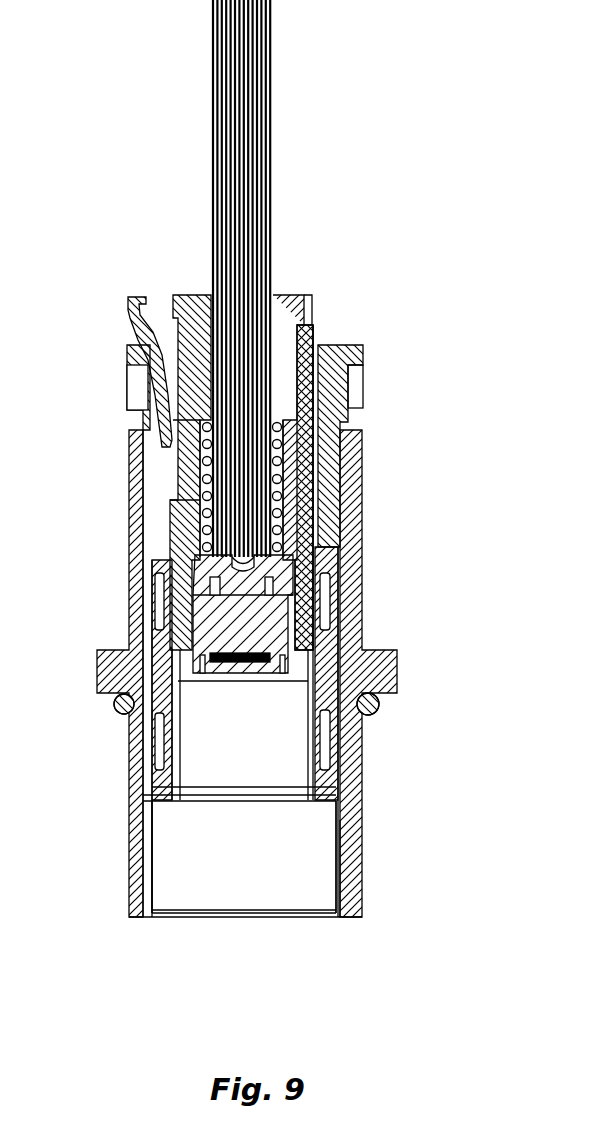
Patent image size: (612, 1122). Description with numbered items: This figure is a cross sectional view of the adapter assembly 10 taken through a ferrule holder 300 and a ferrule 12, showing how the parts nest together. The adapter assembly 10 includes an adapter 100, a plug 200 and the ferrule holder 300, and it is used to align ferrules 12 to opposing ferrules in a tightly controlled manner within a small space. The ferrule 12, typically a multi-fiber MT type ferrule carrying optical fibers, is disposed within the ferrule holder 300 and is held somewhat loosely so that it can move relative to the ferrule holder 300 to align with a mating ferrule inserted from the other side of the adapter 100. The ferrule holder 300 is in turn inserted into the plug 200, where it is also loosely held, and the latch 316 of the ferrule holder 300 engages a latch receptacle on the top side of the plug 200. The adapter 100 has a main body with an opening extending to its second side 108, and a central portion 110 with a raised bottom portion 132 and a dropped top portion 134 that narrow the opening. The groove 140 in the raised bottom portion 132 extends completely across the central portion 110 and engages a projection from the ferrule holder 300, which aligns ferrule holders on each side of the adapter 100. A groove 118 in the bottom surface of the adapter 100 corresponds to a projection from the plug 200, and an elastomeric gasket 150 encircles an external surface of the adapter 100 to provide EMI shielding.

The adapter assembly 10 is at (426, 258).
The ferrule 12 is at (250, 648).
The adapter 100 is at (357, 478).
The second side 108 is at (340, 873).
The central portion 110 is at (187, 672).
The groove 118 is at (337, 843).
The raised bottom portion 132 is at (330, 655).
The dropped top portion 134 is at (160, 659).
The groove 140 is at (307, 612).
The elastomeric gasket 150 is at (113, 704).
The plug 200 is at (342, 380).
The ferrule holder 300 is at (310, 345).
The latch 316 is at (140, 295).